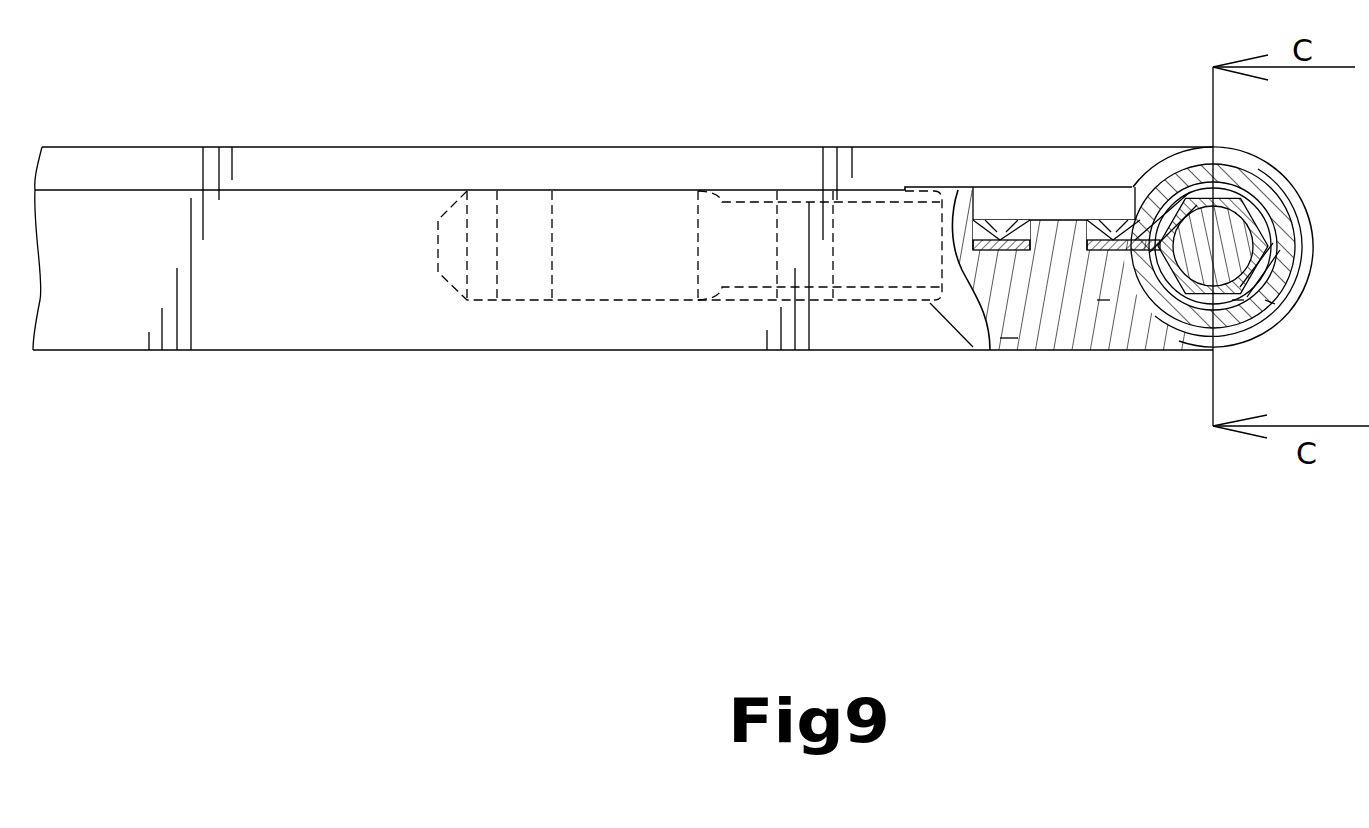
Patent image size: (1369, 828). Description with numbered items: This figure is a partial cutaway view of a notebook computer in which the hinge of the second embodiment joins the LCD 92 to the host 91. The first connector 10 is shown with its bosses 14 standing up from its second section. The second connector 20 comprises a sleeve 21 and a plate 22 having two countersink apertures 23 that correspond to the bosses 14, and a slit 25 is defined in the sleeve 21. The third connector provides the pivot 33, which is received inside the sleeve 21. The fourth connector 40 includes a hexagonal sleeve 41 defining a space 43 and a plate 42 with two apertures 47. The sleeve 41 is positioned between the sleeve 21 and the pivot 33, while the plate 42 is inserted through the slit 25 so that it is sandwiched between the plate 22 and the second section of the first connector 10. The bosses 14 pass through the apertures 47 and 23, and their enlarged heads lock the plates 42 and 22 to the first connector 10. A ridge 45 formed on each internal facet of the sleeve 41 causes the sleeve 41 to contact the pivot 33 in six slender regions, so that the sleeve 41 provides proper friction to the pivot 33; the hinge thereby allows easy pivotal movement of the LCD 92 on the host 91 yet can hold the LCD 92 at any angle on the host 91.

The first connector 10 is at (596, 350).
The bosses 14 is at (1054, 235).
The second connector 20 is at (1165, 180).
The sleeve 21 is at (1250, 183).
The plate 22 is at (1120, 228).
The apertures 23 is at (1020, 240).
The slit 25 is at (1190, 196).
The pivot 33 is at (1238, 238).
The fourth connector 40 is at (1150, 293).
The sleeve 41 is at (1268, 268).
The plate 42 is at (1105, 290).
The space 43 is at (1270, 300).
The ridge 45 is at (1238, 300).
The apertures 47 is at (1010, 338).
The host 91 is at (262, 333).
The LCD 92 is at (280, 168).